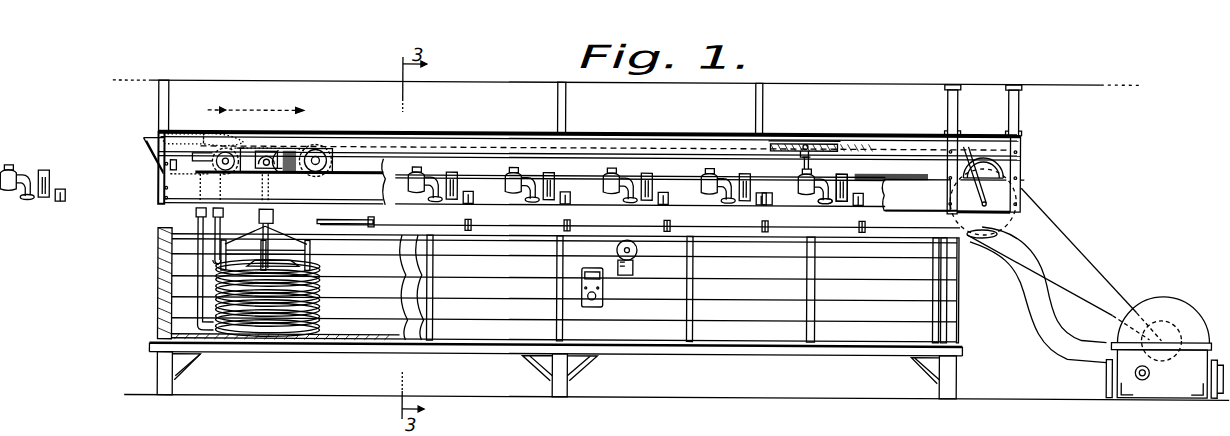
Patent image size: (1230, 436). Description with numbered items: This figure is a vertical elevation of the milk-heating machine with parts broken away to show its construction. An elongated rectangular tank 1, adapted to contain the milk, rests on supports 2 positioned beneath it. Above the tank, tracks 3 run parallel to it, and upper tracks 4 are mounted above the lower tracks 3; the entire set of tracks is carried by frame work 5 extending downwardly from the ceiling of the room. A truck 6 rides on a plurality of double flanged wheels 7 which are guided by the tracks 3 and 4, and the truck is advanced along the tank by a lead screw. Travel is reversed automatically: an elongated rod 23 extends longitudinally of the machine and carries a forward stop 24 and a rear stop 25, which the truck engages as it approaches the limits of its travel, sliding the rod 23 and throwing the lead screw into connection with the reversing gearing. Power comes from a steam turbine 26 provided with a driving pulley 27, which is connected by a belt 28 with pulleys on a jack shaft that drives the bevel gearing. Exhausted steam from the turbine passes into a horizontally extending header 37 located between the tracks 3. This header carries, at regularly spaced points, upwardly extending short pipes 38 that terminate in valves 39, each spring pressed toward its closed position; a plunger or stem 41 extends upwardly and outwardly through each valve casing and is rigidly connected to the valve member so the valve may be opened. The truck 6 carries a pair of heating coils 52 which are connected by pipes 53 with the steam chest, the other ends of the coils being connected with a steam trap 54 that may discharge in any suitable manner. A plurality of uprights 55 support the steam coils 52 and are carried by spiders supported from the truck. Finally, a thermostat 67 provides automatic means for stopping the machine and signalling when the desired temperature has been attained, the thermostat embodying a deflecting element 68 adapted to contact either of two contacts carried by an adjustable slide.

The tank 1 is at (895, 328).
The supports 2 is at (953, 382).
The tracks 3 is at (178, 207).
The upper tracks 4 is at (165, 136).
The frame work 5 is at (160, 102).
The truck 6 is at (290, 157).
The double flanged wheels 7 is at (323, 160).
The elongated rod 23 is at (823, 142).
The forward stop 24 is at (803, 171).
The rear stop 25 is at (160, 166).
The steam turbine 26 is at (1183, 321).
The driving pulley 27 is at (1122, 310).
The belt 28 is at (1125, 292).
The header 37 is at (805, 205).
The short pipes 38 is at (838, 205).
The valves 39 is at (778, 208).
The plunger or stem 41 is at (809, 171).
The heating coils 52 is at (322, 295).
The pipes 53 is at (220, 219).
The steam trap 54 is at (215, 140).
The uprights 55 is at (318, 252).
The thermostat 67 is at (605, 293).
The deflecting element 68 is at (637, 272).